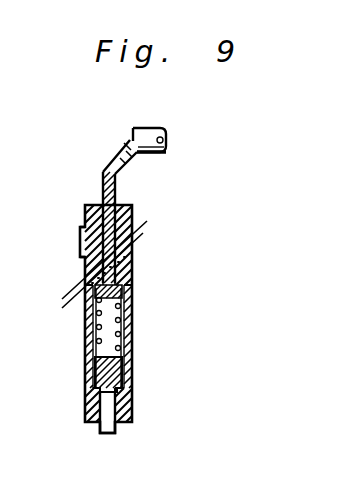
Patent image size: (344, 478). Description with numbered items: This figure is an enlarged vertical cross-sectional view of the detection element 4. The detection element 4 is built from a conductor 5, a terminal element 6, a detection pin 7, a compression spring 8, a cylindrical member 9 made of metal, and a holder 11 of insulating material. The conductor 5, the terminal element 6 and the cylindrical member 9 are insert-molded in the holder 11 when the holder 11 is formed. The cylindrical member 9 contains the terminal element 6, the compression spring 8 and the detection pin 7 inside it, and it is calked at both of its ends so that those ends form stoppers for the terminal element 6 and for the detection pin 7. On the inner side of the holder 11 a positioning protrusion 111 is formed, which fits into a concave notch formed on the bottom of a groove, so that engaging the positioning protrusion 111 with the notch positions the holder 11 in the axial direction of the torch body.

The detection element 4 is at (211, 165).
The conductor 5 is at (152, 153).
The terminal element 6 is at (133, 256).
The detection pin 7 is at (134, 352).
The compression spring 8 is at (134, 311).
The cylindrical member 9 is at (134, 380).
The holder 11 is at (133, 218).
The positioning protrusion 111 is at (80, 246).